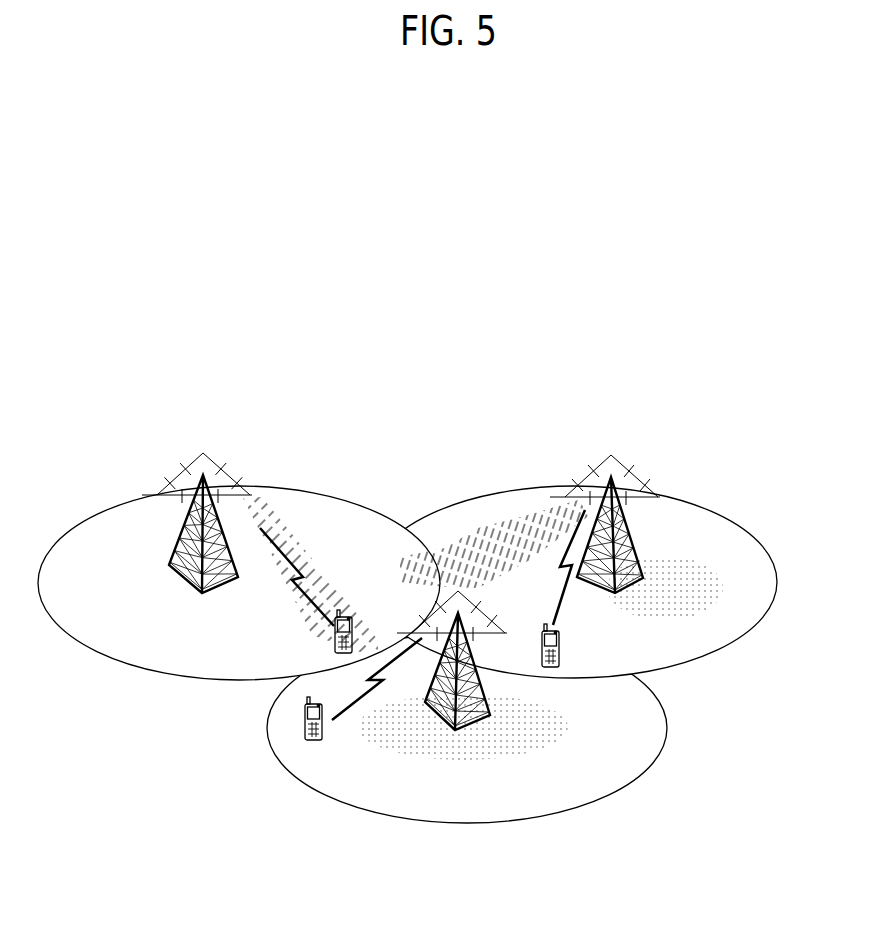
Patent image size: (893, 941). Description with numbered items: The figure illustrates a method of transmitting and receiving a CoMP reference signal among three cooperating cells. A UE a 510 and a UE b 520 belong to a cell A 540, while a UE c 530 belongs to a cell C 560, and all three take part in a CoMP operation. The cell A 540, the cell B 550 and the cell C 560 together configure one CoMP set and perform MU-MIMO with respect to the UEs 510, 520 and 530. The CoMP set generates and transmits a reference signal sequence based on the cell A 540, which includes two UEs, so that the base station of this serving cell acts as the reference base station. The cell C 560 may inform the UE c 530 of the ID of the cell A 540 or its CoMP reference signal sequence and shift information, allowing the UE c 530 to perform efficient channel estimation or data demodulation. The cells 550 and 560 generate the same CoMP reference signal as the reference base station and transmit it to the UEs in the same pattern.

The UE a 510 is at (323, 636).
The UE b 520 is at (307, 723).
The UE c 530 is at (543, 647).
The cell A 540 is at (308, 507).
The cell B 550 is at (652, 730).
The cell C 560 is at (706, 528).